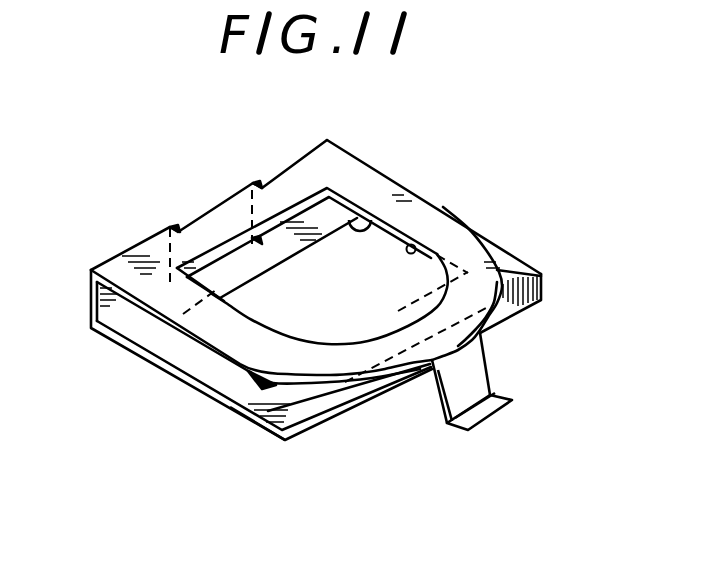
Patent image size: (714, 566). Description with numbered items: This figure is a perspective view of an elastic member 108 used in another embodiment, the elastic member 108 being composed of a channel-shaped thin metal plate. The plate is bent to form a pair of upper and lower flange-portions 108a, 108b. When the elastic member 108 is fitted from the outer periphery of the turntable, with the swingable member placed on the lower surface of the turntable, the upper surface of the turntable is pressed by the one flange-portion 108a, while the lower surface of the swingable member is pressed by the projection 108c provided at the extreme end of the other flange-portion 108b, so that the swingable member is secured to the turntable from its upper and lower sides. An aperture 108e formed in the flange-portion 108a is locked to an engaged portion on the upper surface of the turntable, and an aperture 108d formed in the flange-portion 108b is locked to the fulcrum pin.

The elastic member 108 is at (190, 162).
The flange-portion 108a is at (230, 407).
The flange-portion 108b is at (223, 326).
The projection 108c is at (490, 420).
The aperture 108d is at (414, 246).
The aperture 108e is at (378, 220).